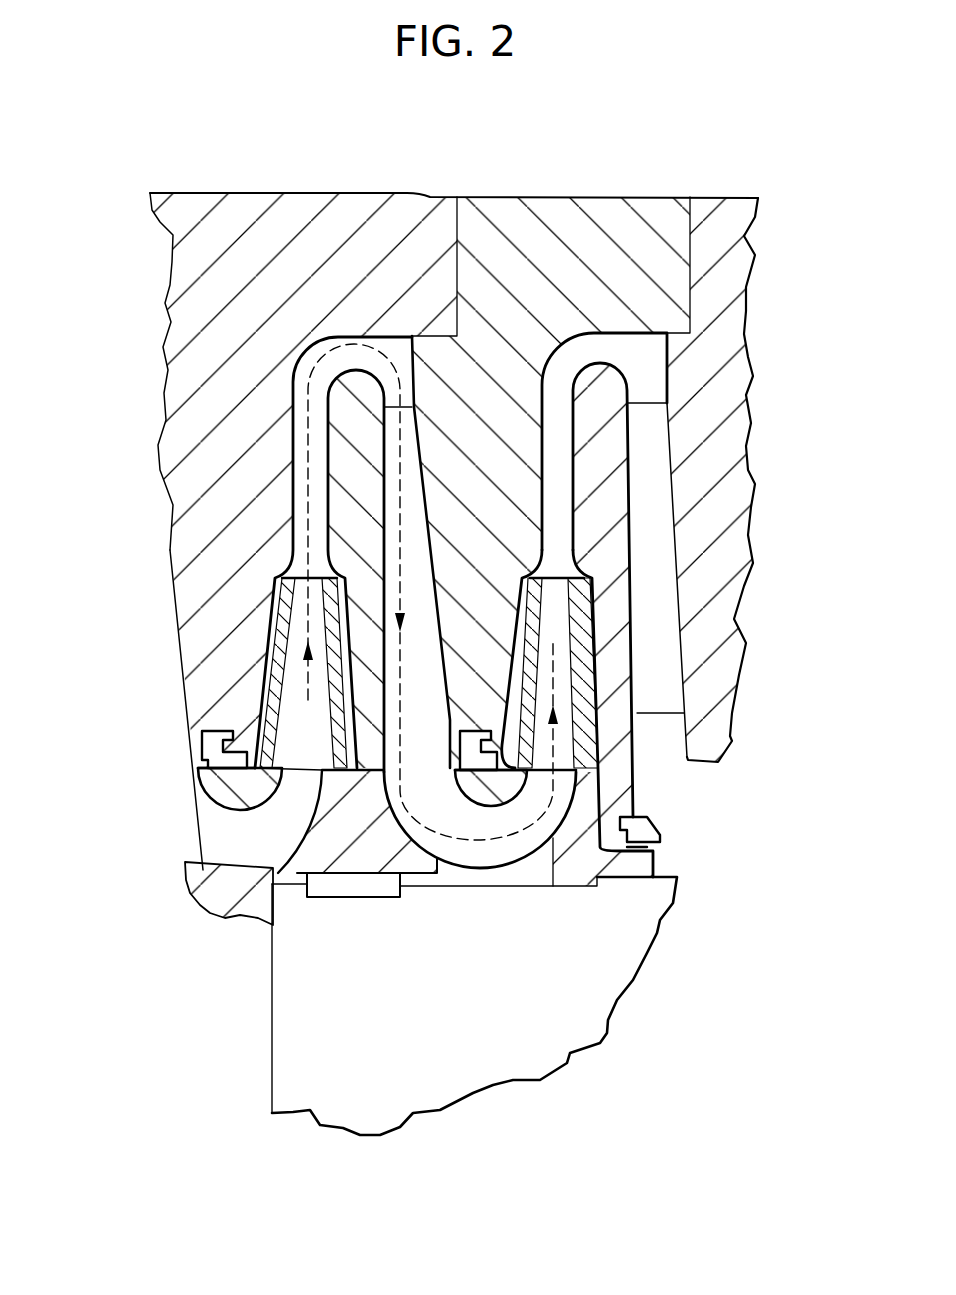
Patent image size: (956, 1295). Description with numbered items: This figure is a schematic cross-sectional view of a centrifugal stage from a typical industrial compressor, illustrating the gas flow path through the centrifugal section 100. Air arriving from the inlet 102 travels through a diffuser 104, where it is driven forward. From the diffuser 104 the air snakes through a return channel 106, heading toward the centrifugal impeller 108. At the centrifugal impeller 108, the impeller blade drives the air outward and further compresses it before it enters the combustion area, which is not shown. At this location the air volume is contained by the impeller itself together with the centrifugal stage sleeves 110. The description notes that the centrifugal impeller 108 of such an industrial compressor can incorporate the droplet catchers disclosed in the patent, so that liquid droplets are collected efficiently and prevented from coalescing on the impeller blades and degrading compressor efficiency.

The centrifugal section 100 is at (127, 273).
The inlet 102 is at (212, 828).
The diffuser 104 is at (303, 502).
The return channel 106 is at (393, 678).
The centrifugal impeller 108 is at (655, 594).
The centrifugal stage sleeves 110 is at (303, 1020).